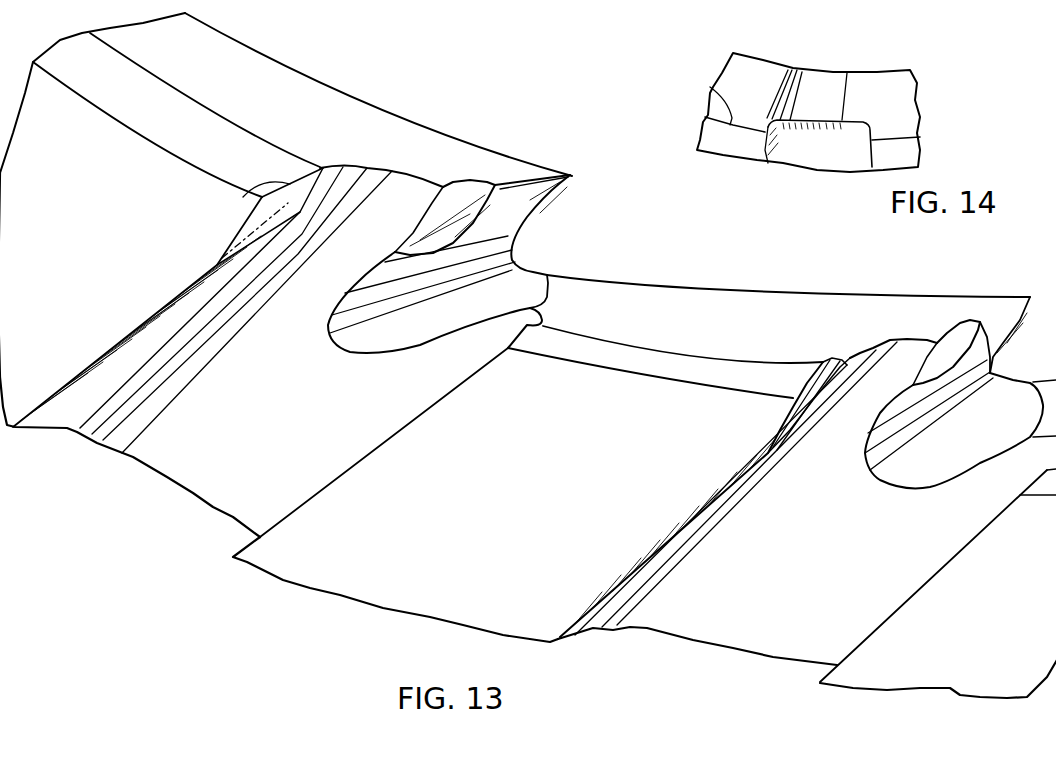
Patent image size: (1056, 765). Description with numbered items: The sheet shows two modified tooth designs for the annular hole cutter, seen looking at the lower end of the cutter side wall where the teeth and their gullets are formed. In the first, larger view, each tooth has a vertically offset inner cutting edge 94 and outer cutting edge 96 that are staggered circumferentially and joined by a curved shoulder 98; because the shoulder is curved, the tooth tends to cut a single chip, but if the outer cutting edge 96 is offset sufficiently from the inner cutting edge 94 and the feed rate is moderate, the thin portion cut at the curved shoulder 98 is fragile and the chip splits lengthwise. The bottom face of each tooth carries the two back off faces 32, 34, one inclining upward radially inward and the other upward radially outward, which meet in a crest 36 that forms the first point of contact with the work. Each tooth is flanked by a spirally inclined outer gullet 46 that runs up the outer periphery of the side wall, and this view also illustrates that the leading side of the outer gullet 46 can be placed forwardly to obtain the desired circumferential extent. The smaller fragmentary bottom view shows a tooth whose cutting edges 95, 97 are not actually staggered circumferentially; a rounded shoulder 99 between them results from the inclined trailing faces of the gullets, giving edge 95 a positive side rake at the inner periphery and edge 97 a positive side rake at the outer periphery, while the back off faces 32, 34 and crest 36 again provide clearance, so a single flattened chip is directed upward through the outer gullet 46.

In FIG. 13, the back off face 32 is at (347, 97).
In FIG. 14, the back off face 32 is at (763, 70).
In FIG. 13, the back off face 34 is at (170, 137).
In FIG. 14, the back off face 34 is at (730, 143).
In FIG. 13, the crest 36 is at (218, 115).
In FIG. 14, the crest 36 is at (720, 93).
In FIG. 13, the outer gullet 46 is at (213, 492).
In FIG. 13, the inner cutting edge 94 is at (533, 175).
In FIG. 14, the cutting edge 95 is at (803, 72).
In FIG. 13, the outer cutting edge 96 is at (280, 203).
In FIG. 14, the cutting edge 97 is at (764, 155).
In FIG. 13, the curved shoulder 98 is at (397, 168).
In FIG. 14, the rounded shoulder 99 is at (775, 123).